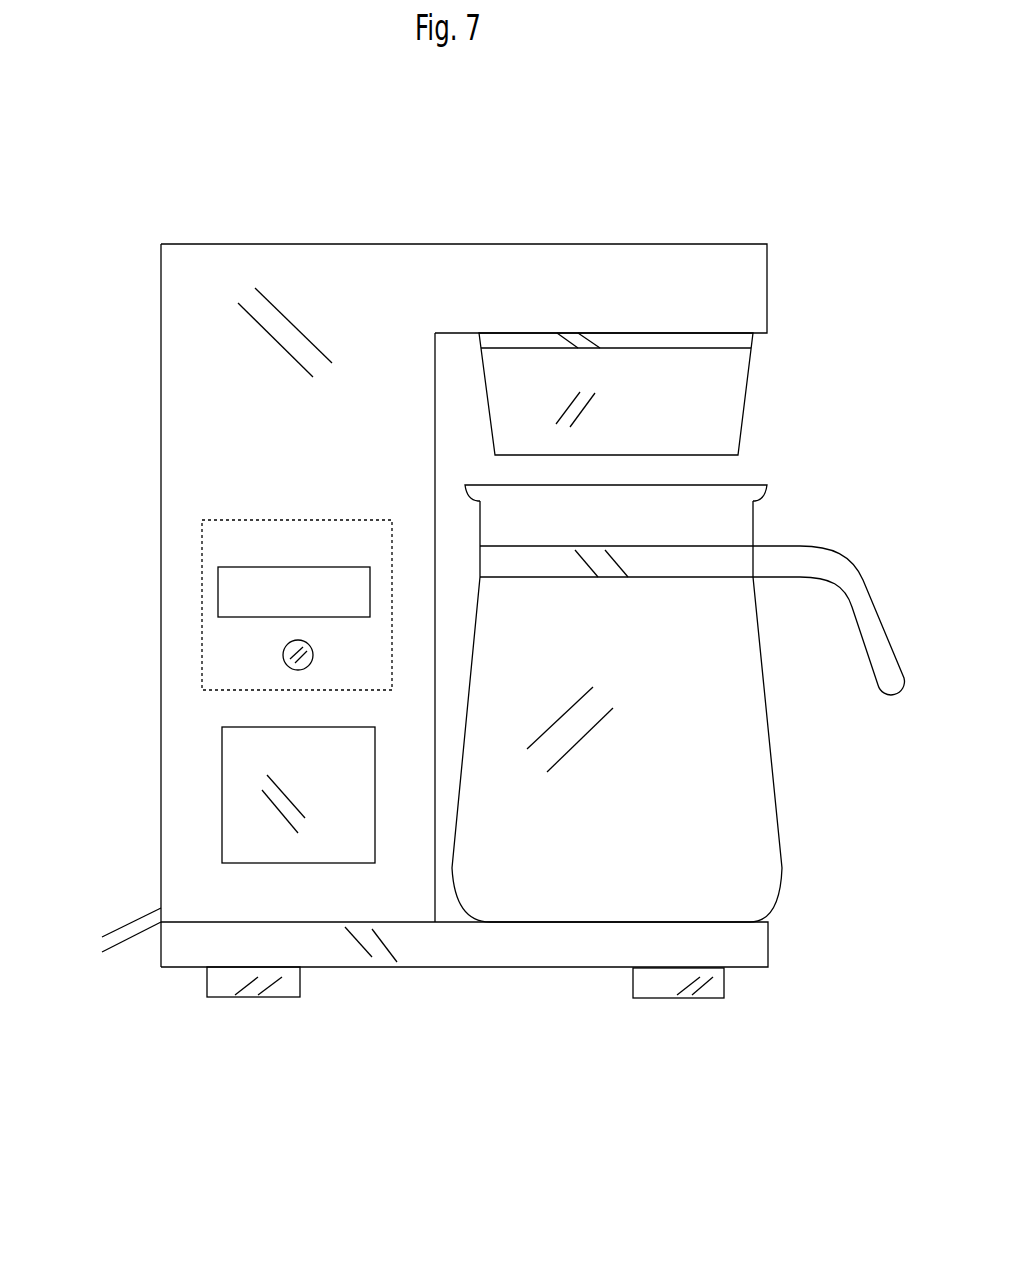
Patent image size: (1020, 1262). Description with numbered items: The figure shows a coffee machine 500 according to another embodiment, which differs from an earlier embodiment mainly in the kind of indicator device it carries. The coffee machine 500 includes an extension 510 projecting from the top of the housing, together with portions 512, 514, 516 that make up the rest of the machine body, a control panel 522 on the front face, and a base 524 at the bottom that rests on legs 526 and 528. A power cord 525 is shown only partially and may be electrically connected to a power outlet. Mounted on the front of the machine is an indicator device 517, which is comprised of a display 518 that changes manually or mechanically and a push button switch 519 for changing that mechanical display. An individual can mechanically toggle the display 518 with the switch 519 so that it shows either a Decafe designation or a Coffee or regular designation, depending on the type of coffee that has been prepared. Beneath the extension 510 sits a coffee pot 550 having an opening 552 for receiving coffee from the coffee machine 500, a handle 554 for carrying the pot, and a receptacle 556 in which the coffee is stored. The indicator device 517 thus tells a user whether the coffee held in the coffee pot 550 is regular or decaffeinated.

The coffee machine 500 is at (633, 210).
The extension 510 is at (686, 292).
The portion 512 is at (722, 422).
The portion 514 is at (730, 343).
The portion 516 is at (207, 422).
The indicator device 517 is at (283, 518).
The display 518 is at (340, 570).
The push button switch 519 is at (305, 665).
The control panel 522 is at (242, 775).
The base 524 is at (190, 945).
The power cord 525 is at (137, 927).
The leg 526 is at (220, 988).
The leg 528 is at (665, 985).
The coffee pot 550 is at (683, 685).
The opening 552 is at (735, 484).
The handle 554 is at (853, 585).
The receptacle 556 is at (720, 778).